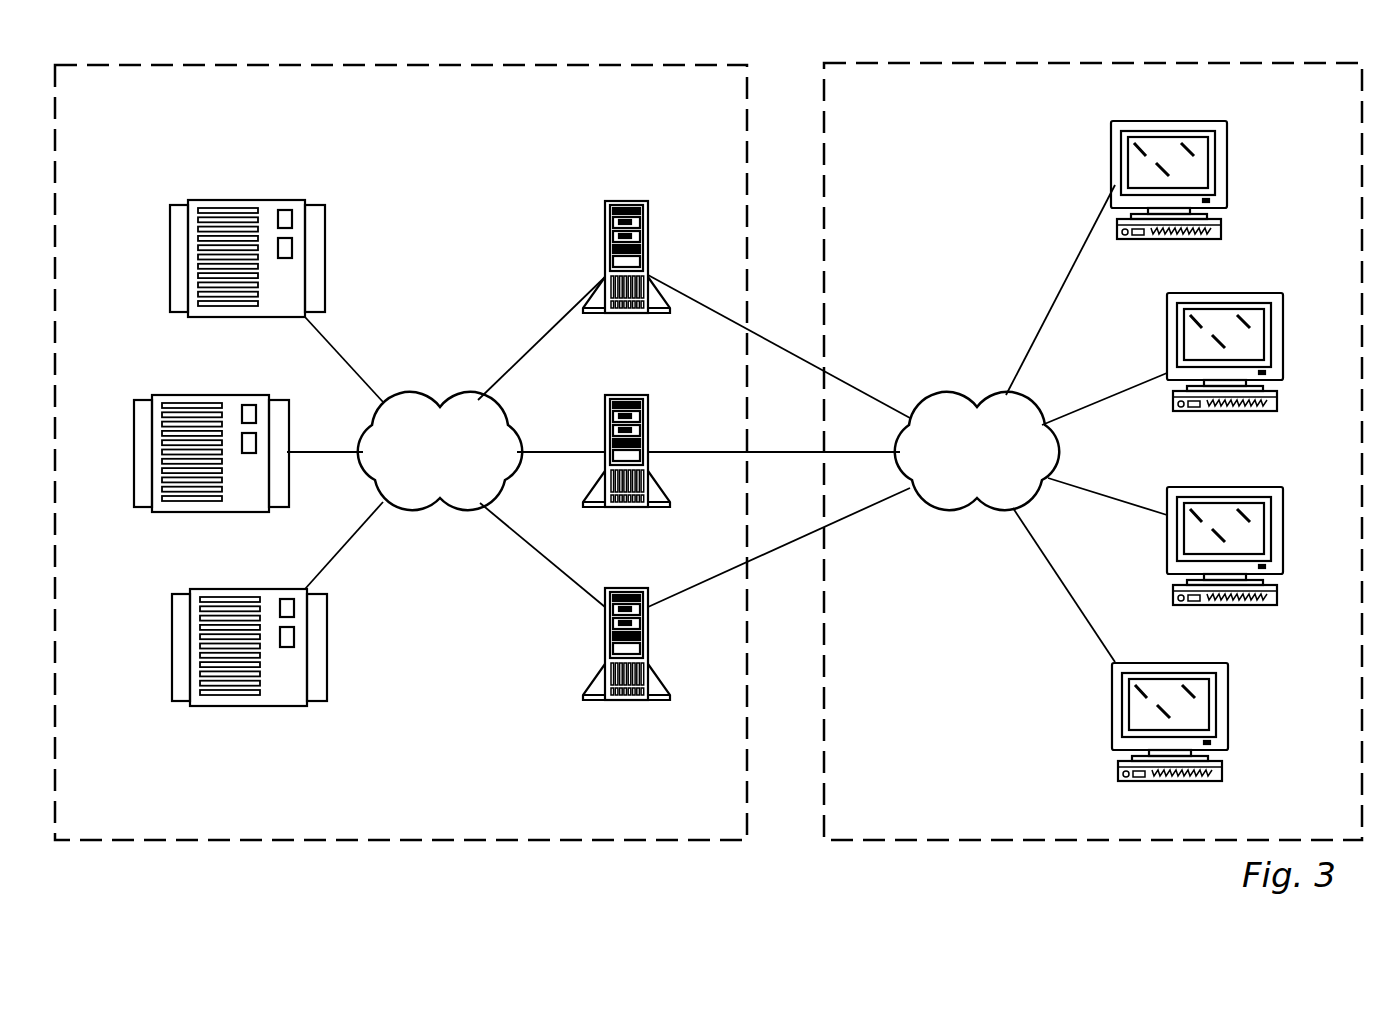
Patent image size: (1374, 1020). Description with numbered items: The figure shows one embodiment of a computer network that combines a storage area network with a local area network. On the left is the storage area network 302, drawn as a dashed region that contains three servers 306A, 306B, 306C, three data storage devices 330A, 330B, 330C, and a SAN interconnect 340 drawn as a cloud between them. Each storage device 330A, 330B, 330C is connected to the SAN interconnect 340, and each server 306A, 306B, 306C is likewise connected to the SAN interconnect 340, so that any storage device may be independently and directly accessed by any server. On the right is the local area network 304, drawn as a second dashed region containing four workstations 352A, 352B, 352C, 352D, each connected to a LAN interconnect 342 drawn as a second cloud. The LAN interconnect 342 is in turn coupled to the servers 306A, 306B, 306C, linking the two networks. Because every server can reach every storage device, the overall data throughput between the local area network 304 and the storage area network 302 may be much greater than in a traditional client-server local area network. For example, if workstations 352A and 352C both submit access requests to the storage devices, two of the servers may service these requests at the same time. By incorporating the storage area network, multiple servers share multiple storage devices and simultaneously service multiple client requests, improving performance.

The storage area network (SAN) 302 is at (696, 827).
The local area network (LAN) 304 is at (1312, 825).
The server 306A is at (632, 201).
The server 306B is at (632, 395).
The server 306C is at (632, 588).
The data storage device 330A is at (268, 200).
The data storage device 330B is at (231, 395).
The data storage device 330C is at (268, 589).
The SAN interconnect 340 is at (421, 480).
The LAN interconnect 342 is at (958, 480).
The workstation 352A is at (1188, 121).
The workstation 352B is at (1245, 293).
The workstation 352C is at (1245, 487).
The workstation 352D is at (1190, 663).